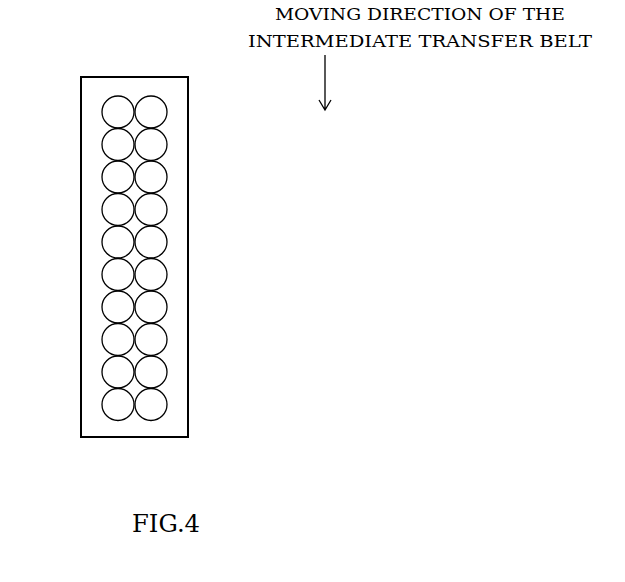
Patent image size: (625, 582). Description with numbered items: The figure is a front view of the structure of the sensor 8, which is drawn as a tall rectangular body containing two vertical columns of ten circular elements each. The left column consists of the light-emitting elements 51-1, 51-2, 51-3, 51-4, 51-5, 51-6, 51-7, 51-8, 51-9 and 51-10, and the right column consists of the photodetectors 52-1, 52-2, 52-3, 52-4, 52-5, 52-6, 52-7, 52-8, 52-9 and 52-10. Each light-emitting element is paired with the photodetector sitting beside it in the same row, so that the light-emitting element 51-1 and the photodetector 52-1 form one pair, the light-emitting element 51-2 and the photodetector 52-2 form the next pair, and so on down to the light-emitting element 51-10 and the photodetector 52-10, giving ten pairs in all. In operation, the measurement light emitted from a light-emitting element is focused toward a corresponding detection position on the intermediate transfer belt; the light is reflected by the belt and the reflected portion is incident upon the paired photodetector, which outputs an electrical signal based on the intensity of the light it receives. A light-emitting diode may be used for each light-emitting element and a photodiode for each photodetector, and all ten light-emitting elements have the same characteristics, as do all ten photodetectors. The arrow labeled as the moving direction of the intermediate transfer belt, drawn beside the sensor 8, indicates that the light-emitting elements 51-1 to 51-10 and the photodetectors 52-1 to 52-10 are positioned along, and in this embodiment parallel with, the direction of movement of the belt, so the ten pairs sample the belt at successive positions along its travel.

The sensor 8 is at (180, 77).
The light-emitting element 51-1 is at (102, 112).
The light-emitting element 51-2 is at (102, 144).
The light-emitting element 51-3 is at (102, 177).
The light-emitting element 51-4 is at (102, 210).
The light-emitting element 51-5 is at (102, 242).
The light-emitting element 51-6 is at (102, 274).
The light-emitting element 51-7 is at (102, 307).
The light-emitting element 51-8 is at (102, 340).
The light-emitting element 51-9 is at (102, 372).
The light-emitting element 51-10 is at (102, 404).
The photodetector 52-1 is at (167, 112).
The photodetector 52-2 is at (167, 144).
The photodetector 52-3 is at (167, 177).
The photodetector 52-4 is at (167, 210).
The photodetector 52-5 is at (167, 242).
The photodetector 52-6 is at (167, 274).
The photodetector 52-7 is at (167, 307).
The photodetector 52-8 is at (167, 340).
The photodetector 52-9 is at (167, 372).
The photodetector 52-10 is at (167, 404).